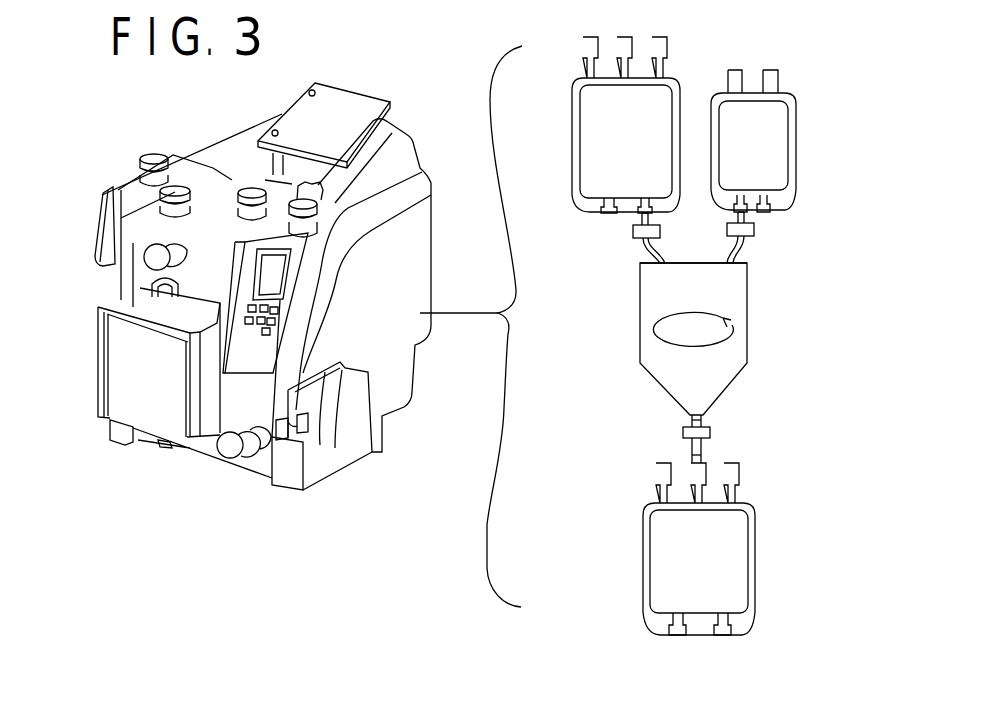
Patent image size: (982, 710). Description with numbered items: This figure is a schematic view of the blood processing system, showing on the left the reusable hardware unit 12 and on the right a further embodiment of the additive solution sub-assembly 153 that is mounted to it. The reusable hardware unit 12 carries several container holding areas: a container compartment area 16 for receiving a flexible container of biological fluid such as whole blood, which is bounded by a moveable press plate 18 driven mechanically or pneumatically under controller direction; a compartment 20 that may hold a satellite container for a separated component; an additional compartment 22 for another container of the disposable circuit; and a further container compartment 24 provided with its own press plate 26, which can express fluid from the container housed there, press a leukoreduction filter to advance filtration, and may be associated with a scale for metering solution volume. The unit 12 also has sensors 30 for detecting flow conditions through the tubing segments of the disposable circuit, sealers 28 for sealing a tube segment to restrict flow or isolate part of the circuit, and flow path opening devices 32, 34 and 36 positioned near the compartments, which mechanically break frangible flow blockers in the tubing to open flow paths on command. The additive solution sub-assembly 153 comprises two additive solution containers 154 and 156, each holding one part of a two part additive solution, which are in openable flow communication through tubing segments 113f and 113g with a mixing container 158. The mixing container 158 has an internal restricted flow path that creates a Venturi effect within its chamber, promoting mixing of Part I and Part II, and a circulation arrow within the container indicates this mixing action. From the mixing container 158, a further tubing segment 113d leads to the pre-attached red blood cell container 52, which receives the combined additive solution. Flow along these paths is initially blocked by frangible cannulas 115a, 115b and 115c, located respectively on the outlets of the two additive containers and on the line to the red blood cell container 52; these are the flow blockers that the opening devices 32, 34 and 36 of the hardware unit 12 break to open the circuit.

The reusable hardware unit 12 is at (82, 190).
The container compartment area 16 is at (100, 377).
The press plate 18 is at (137, 400).
The compartment 20 is at (115, 186).
The compartment 22 is at (337, 428).
The container compartment 24 is at (385, 140).
The press plate 26 is at (355, 100).
The sealers 28 is at (152, 261).
The sensors 30 is at (222, 188).
The flow path opening device 32 is at (155, 288).
The flow path opening device 34 is at (752, 238).
The flow path opening device 36 is at (288, 430).
The red blood cell container 52 is at (730, 565).
The tubing 113d is at (704, 448).
The tubing segment 113f is at (641, 248).
The tubing segment 113g is at (745, 262).
The frangible cannula 115a is at (638, 225).
The frangible cannula 115b is at (755, 222).
The frangible cannula 115c is at (684, 442).
The additive solution sub-assembly 153 is at (828, 359).
The source bag 154 is at (602, 103).
The additive bag 156 is at (770, 128).
The mixing container 158 is at (728, 292).